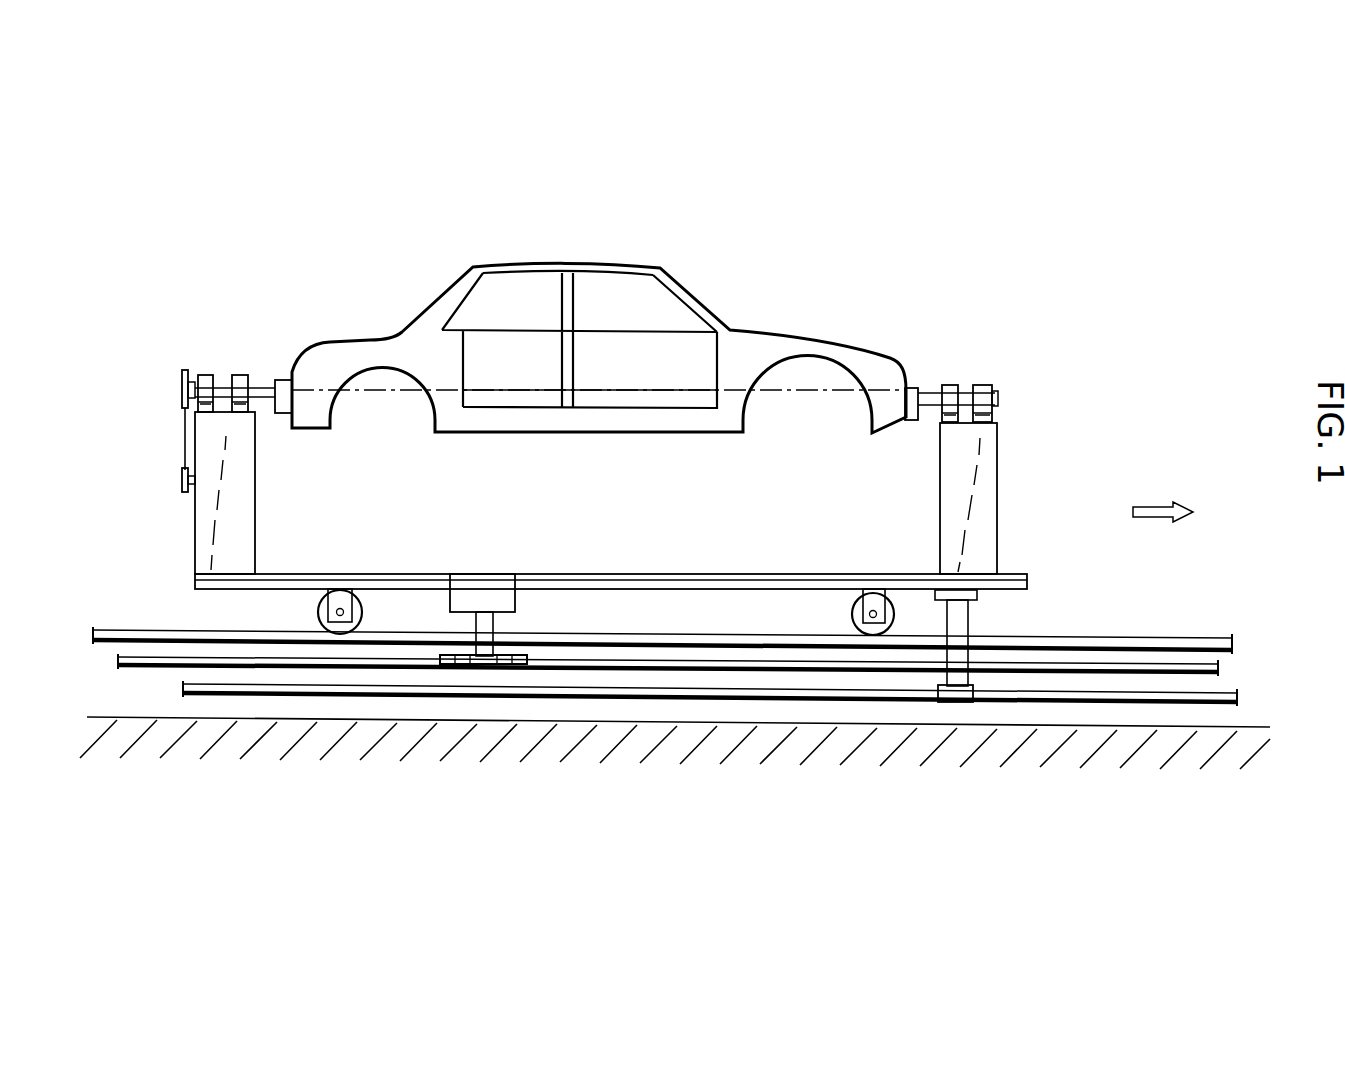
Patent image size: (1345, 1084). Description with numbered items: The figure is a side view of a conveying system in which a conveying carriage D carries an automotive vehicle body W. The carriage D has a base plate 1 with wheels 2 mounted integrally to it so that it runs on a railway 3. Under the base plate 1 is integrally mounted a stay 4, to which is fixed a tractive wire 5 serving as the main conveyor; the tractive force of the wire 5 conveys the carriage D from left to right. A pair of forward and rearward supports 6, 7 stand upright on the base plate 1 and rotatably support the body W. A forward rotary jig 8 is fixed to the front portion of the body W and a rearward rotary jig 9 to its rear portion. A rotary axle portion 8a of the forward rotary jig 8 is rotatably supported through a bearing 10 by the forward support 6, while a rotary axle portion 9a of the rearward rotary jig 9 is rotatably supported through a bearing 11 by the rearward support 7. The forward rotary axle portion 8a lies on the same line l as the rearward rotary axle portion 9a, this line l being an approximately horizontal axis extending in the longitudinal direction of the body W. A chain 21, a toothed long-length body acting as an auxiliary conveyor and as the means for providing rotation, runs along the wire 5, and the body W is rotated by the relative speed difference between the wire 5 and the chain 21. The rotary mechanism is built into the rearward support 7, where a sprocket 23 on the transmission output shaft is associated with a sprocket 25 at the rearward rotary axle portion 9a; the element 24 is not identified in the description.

The base plate 1 is at (580, 573).
The wheels 2 is at (362, 622).
The railway 3 is at (1100, 638).
The stay 4 is at (963, 627).
The tractive wire 5 is at (1092, 698).
The forward support 6 is at (993, 548).
The rearward support 7 is at (252, 507).
The forward rotary jig 8 is at (908, 388).
The rotary axle portion 8a is at (958, 385).
The rearward rotary jig 9 is at (283, 383).
The rotary axle portion 9a is at (230, 377).
The bearing 10 is at (980, 410).
The bearing 11 is at (248, 402).
The chain 21 is at (1167, 663).
The sprocket 23 is at (182, 480).
The rod 24 is at (185, 448).
The sprocket 25 is at (182, 385).
The automotive vehicle body W is at (753, 338).
The conveying carriage D is at (1027, 495).
The line l is at (653, 393).